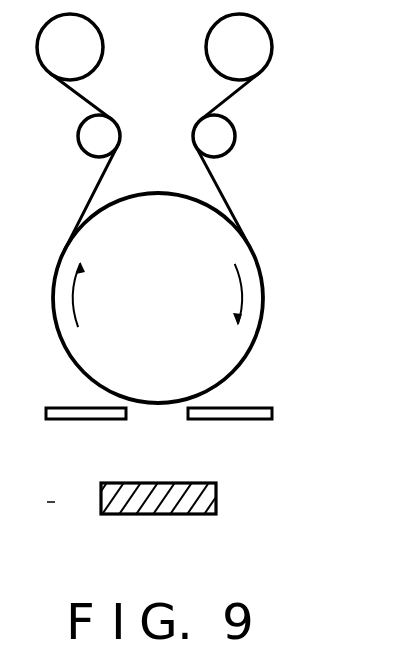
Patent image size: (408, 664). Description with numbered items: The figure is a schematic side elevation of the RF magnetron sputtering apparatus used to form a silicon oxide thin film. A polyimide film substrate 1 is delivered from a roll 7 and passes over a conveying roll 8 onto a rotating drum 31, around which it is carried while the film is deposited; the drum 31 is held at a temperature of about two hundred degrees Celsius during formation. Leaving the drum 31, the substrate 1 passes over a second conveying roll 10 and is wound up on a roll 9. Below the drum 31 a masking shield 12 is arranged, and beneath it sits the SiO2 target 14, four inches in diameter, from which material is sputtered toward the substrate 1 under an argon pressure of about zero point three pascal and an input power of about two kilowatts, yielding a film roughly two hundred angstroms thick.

The substrate 1 is at (241, 86).
The roll 7 is at (258, 48).
The conveying roll 8 is at (223, 135).
The roll 9 is at (88, 47).
The conveying roll 10 is at (110, 137).
The masking shield 12 is at (238, 407).
The SiO2 target 14 is at (163, 515).
The rotating drum 31 is at (228, 252).